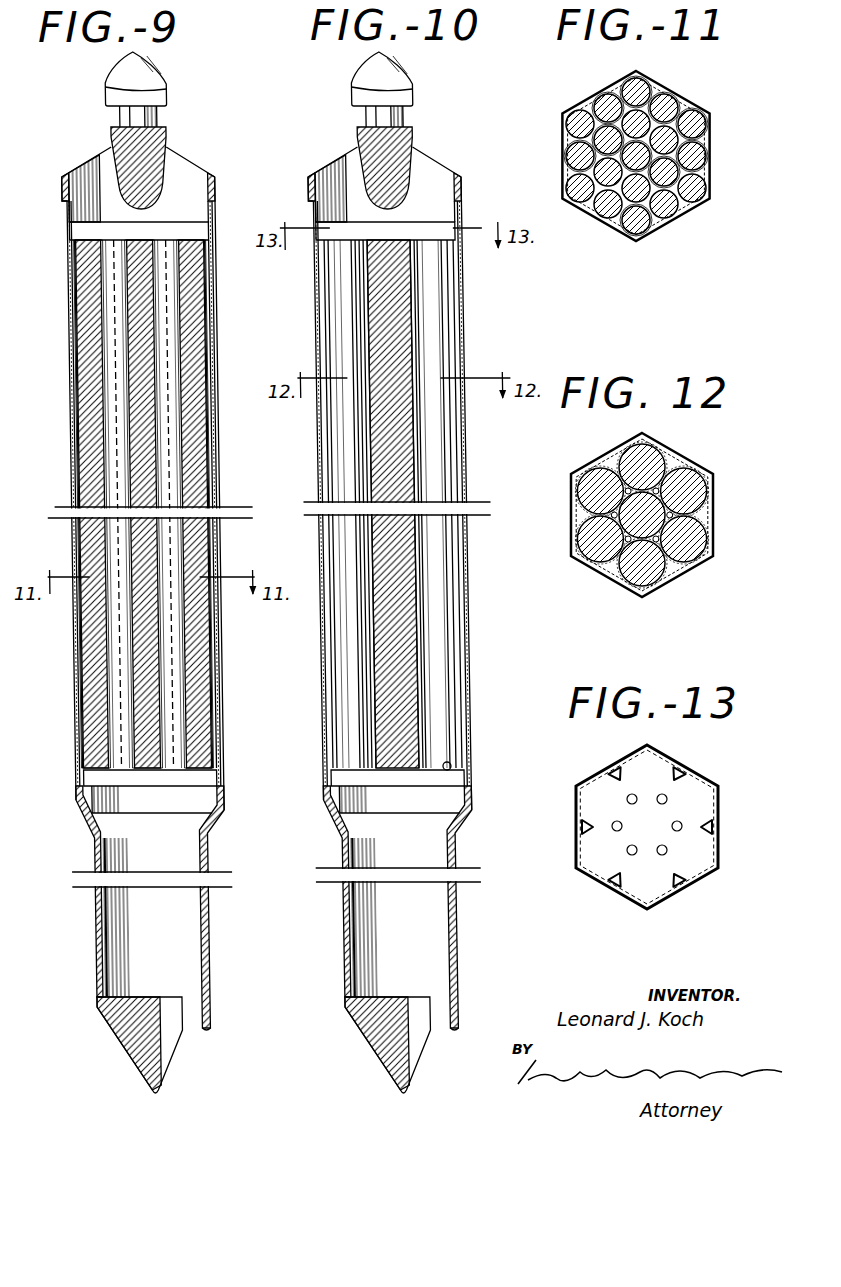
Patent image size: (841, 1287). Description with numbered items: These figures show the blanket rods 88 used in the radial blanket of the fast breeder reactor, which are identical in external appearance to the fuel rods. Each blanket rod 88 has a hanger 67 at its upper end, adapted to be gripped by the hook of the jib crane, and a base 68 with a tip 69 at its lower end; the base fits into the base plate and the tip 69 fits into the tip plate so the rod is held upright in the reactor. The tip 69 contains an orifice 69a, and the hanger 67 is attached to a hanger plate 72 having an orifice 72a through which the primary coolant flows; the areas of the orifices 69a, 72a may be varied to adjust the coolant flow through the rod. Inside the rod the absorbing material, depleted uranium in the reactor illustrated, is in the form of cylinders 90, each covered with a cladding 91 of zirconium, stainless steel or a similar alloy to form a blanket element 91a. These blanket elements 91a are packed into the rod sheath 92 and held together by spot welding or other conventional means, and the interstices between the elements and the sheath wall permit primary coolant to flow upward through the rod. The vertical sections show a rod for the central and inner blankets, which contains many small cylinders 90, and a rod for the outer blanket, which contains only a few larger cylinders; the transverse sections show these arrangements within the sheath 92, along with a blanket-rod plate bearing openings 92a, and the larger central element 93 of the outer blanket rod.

In FIG. 9, the hanger 67 is at (163, 99).
In FIG. 10, the hanger 67 is at (405, 85).
In FIG. 9, the base 68 is at (197, 923).
In FIG. 10, the base 68 is at (415, 907).
In FIG. 9, the tip 69 is at (113, 1038).
In FIG. 10, the tip 69 is at (372, 1045).
In FIG. 9, the orifice 69a is at (192, 1030).
In FIG. 10, the orifice 69a is at (472, 1040).
In FIG. 9, the hanger plate 72 is at (210, 195).
In FIG. 10, the hanger plate 72 is at (409, 197).
In FIG. 9, the orifice 72a is at (195, 175).
In FIG. 10, the orifice 72a is at (405, 154).
In FIG. 9, the blanket rod 88 is at (148, 572).
In FIG. 10, the blanket rod 88 is at (412, 572).
In FIG. 9, the cylinder 90 is at (88, 428).
In FIG. 11, the cylinder 90 is at (618, 222).
In FIG. 9, the cladding 91 is at (72, 718).
In FIG. 11, the cladding 91 is at (675, 211).
In FIG. 9, the blanket element 91a is at (163, 363).
In FIG. 11, the blanket element 91a is at (706, 138).
In FIG. 9, the rod sheath 92 is at (211, 703).
In FIG. 10, the rod sheath 92 is at (417, 505).
In FIG. 11, the rod sheath 92 is at (712, 170).
In FIG. 12, the rod sheath 92 is at (686, 575).
In FIG. 13, the rod sheath 92 is at (720, 803).
In FIG. 10, the end plate openings 92a is at (493, 760).
In FIG. 13, the end plate openings 92a is at (596, 838).
In FIG. 10, the central fuel rod 93 is at (352, 504).
In FIG. 12, the central fuel rod 93 is at (615, 570).